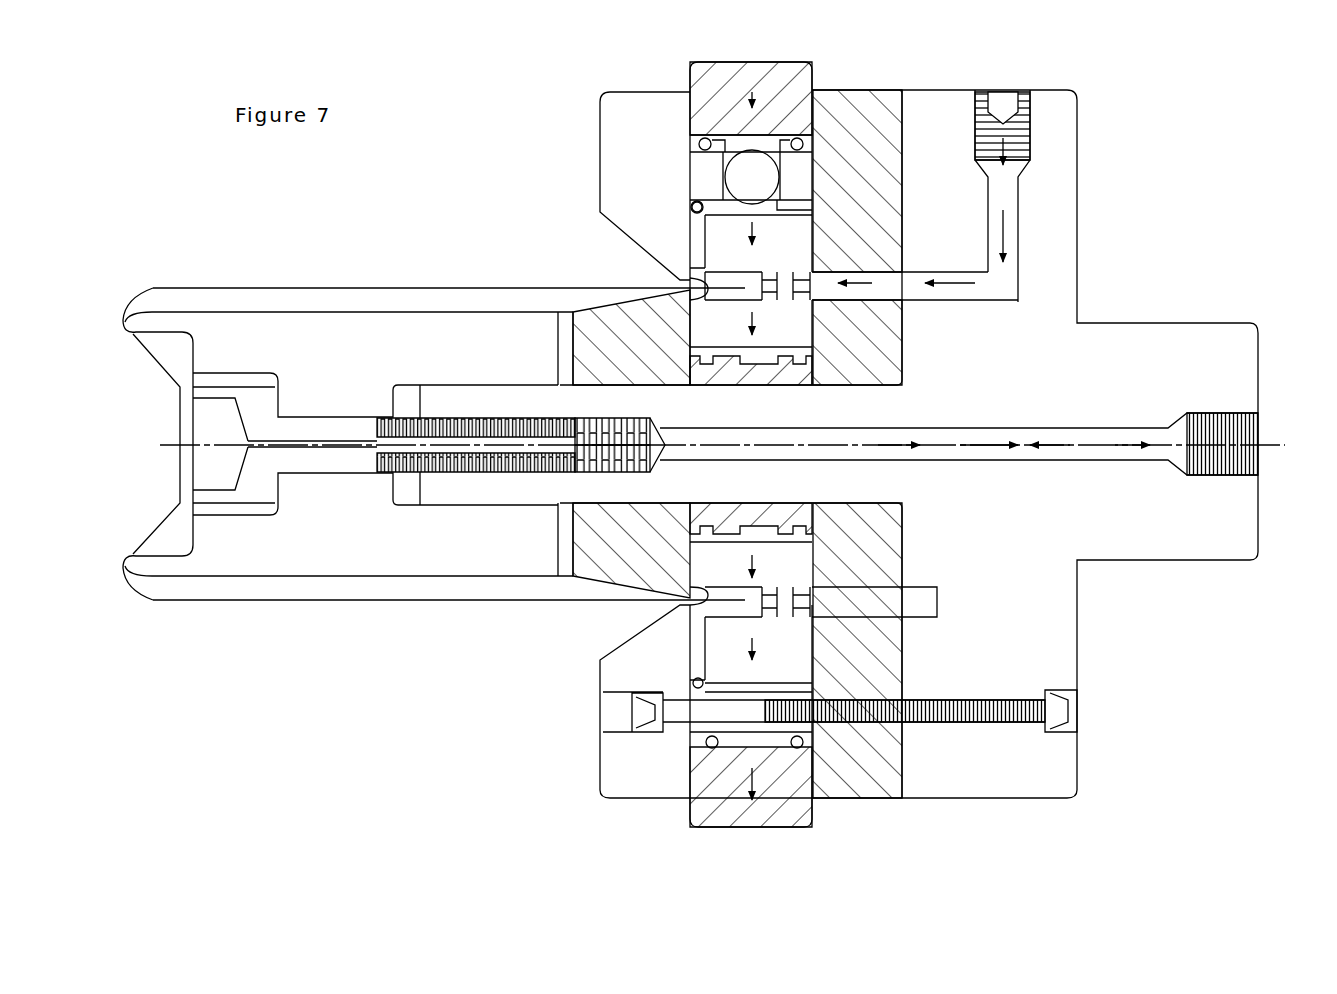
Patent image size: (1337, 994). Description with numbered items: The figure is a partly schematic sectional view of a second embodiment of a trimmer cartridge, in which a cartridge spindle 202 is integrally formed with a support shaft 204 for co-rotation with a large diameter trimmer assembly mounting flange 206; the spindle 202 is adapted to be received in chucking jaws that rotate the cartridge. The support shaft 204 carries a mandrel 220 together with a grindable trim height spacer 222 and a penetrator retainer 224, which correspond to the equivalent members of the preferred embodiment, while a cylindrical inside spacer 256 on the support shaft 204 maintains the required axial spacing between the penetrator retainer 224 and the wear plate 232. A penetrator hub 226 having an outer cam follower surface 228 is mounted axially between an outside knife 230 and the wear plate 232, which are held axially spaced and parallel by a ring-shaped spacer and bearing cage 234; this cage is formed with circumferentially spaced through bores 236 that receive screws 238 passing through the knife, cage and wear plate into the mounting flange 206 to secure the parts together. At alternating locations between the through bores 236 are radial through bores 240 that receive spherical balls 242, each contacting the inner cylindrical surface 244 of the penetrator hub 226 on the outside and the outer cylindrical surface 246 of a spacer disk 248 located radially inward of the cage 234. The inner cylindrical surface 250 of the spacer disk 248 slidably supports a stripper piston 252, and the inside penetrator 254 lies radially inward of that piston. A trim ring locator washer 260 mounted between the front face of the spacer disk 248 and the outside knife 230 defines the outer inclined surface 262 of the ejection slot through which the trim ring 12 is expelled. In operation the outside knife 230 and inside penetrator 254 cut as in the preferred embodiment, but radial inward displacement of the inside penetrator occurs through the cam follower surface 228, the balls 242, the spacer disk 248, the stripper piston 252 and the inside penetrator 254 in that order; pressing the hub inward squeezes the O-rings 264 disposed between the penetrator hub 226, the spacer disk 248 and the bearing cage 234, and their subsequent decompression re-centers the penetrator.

The trim ring 12 is at (270, 603).
The cartridge spindle 202 is at (1130, 500).
The support shaft 204 is at (632, 492).
The trimmer assembly mounting flange 206 is at (1048, 768).
The mandrel 220 is at (375, 560).
The grindable trim height spacer 222 is at (565, 548).
The penetrator retainer 224 is at (600, 548).
The penetrator hub 226 is at (752, 62).
The outer cam follower surface 228 is at (732, 827).
The outside knife 230 is at (580, 98).
The wear plate 232 is at (862, 110).
The spacer and bearing cage 234 is at (690, 165).
The through bores 236 is at (778, 700).
The screws 238 is at (682, 700).
The radial through bores 240 is at (775, 203).
The spherical balls 242 is at (752, 175).
The inner cylindrical surface 244 is at (778, 158).
The outer cylindrical surface 246 is at (727, 210).
The spacer disk 248 is at (720, 255).
The inner cylindrical surface 250 is at (745, 618).
The stripper piston 252 is at (800, 272).
The inside penetrator 254 is at (805, 328).
The cylindrical inside spacer 256 is at (700, 518).
The trim ring locator washer 260 is at (695, 210).
The outer inclined surface 262 is at (688, 300).
The O-rings 264 is at (790, 748).